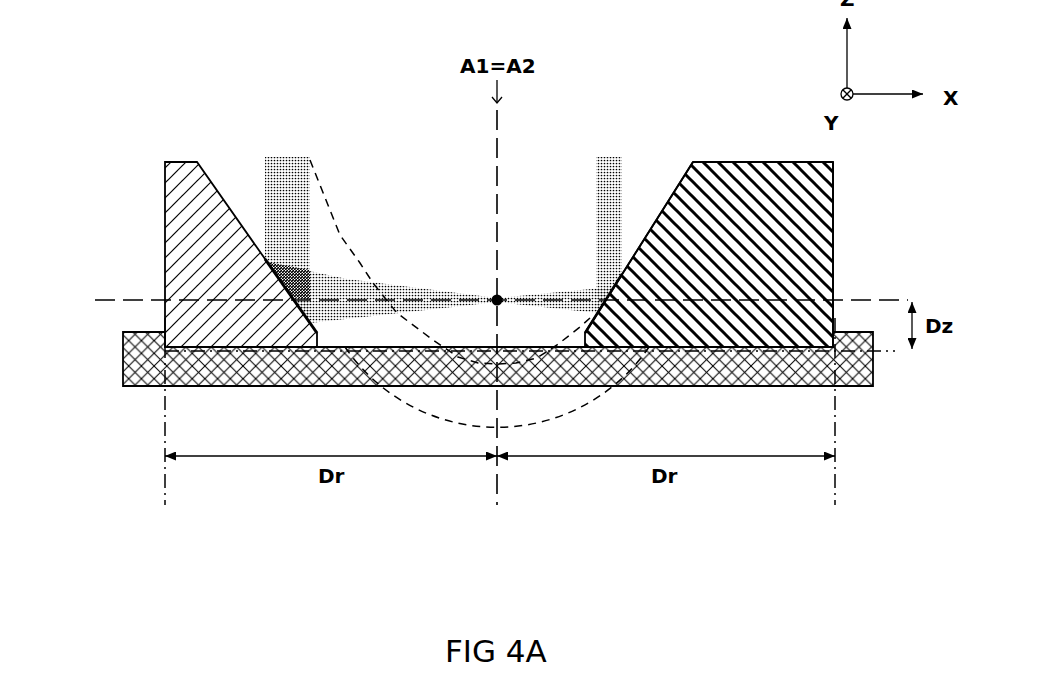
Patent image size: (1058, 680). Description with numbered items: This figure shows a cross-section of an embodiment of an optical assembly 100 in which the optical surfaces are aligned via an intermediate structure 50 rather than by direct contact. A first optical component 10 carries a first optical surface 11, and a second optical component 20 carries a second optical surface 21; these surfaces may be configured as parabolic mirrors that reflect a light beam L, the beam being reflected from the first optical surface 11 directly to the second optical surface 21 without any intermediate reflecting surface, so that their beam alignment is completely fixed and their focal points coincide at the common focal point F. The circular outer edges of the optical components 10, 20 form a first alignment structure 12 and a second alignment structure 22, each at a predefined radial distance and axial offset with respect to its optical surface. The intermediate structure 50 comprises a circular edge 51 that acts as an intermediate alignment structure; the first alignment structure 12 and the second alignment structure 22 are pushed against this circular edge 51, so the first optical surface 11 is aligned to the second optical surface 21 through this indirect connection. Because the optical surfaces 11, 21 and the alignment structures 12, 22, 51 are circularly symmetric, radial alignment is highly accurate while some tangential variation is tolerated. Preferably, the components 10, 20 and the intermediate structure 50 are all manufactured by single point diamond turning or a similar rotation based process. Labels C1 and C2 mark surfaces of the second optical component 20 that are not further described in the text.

The optical assembly 100 is at (150, 92).
The first optical component 10 is at (178, 277).
The first optical surface 11 is at (291, 294).
The first alignment structure 12 is at (167, 355).
The second optical component 20 is at (700, 185).
The second optical surface 21 is at (602, 298).
The second alignment structure 22 is at (838, 352).
The intermediate structure 50 is at (137, 349).
The circular edge 51 is at (167, 355).
The light beam L is at (294, 220).
The focal point F is at (490, 288).
The first side surface of second prism C1 is at (773, 209).
The inclined surface of second prism C2 is at (635, 255).